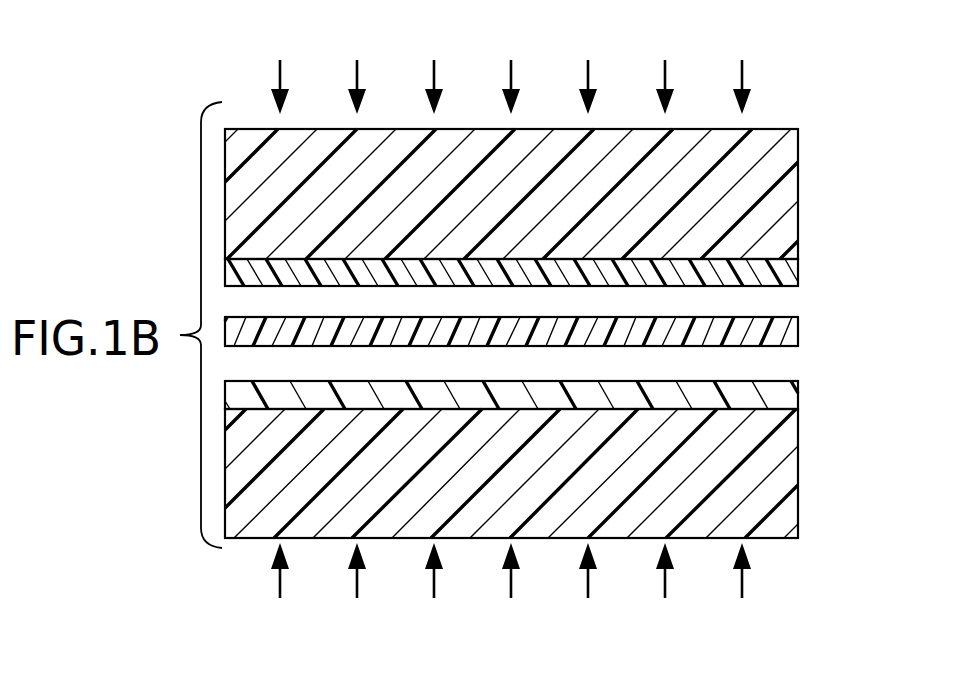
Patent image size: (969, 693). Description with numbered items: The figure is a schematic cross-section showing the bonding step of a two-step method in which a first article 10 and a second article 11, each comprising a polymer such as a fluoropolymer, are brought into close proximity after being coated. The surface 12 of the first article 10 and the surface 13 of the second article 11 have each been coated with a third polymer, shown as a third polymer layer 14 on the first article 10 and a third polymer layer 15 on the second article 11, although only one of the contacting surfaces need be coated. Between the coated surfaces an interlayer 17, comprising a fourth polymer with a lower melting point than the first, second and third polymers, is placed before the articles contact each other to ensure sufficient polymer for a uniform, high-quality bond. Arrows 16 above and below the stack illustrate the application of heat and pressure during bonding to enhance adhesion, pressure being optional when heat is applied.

The first article 10 is at (798, 190).
The second article 11 is at (798, 491).
The surface of first article 12 is at (798, 258).
The surface of second article 13 is at (798, 410).
The third polymer layer on first article 14 is at (787, 288).
The third polymer layer on second article 15 is at (798, 381).
The arrows 16 is at (434, 60).
The interlayer 17 is at (798, 333).